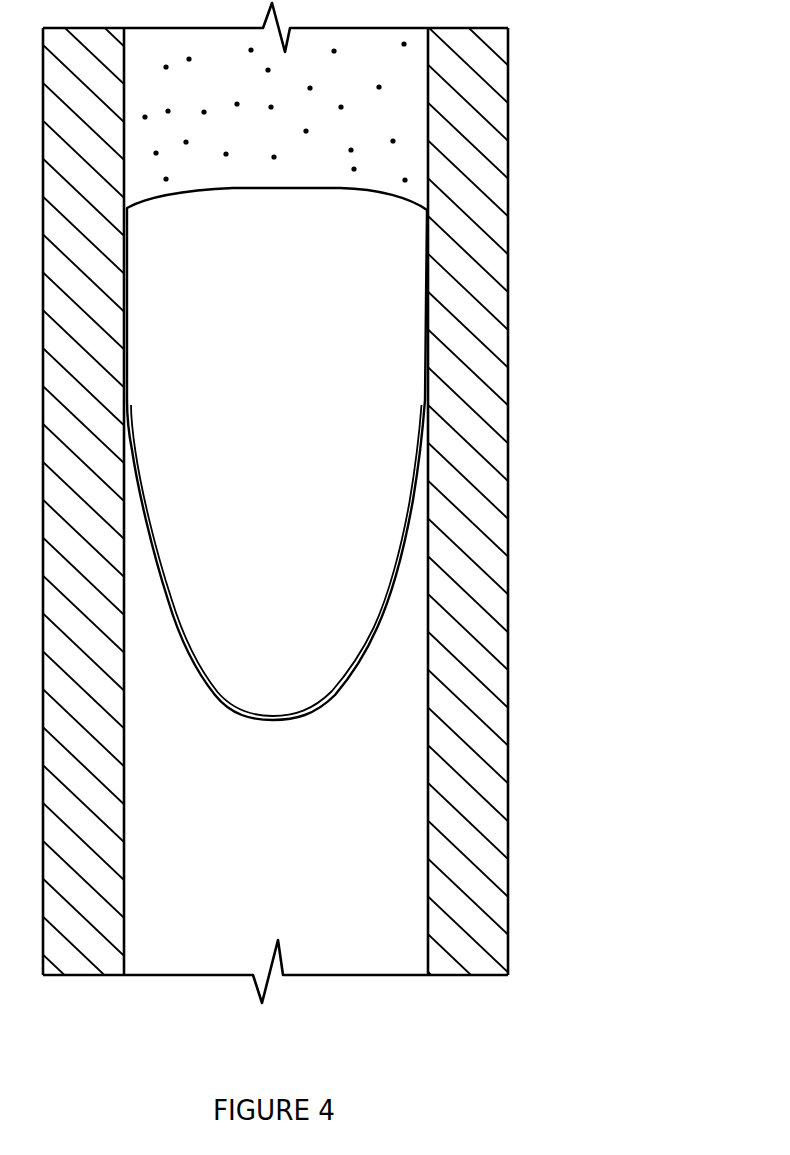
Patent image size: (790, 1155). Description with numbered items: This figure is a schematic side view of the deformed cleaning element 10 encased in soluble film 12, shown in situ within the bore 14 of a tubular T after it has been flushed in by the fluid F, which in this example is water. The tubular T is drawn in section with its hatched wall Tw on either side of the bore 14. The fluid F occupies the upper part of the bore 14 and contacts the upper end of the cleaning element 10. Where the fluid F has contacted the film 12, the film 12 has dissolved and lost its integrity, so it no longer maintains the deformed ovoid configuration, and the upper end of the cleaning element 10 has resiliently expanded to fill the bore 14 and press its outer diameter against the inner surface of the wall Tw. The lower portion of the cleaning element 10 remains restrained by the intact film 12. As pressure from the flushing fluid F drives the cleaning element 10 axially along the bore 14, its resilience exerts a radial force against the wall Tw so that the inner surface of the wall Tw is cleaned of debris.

The fluid F is at (279, 124).
The cleaning element 10 is at (430, 362).
The tubular T is at (512, 500).
The film 12 is at (377, 628).
The bore 14 is at (295, 835).
The wall Tw is at (430, 888).